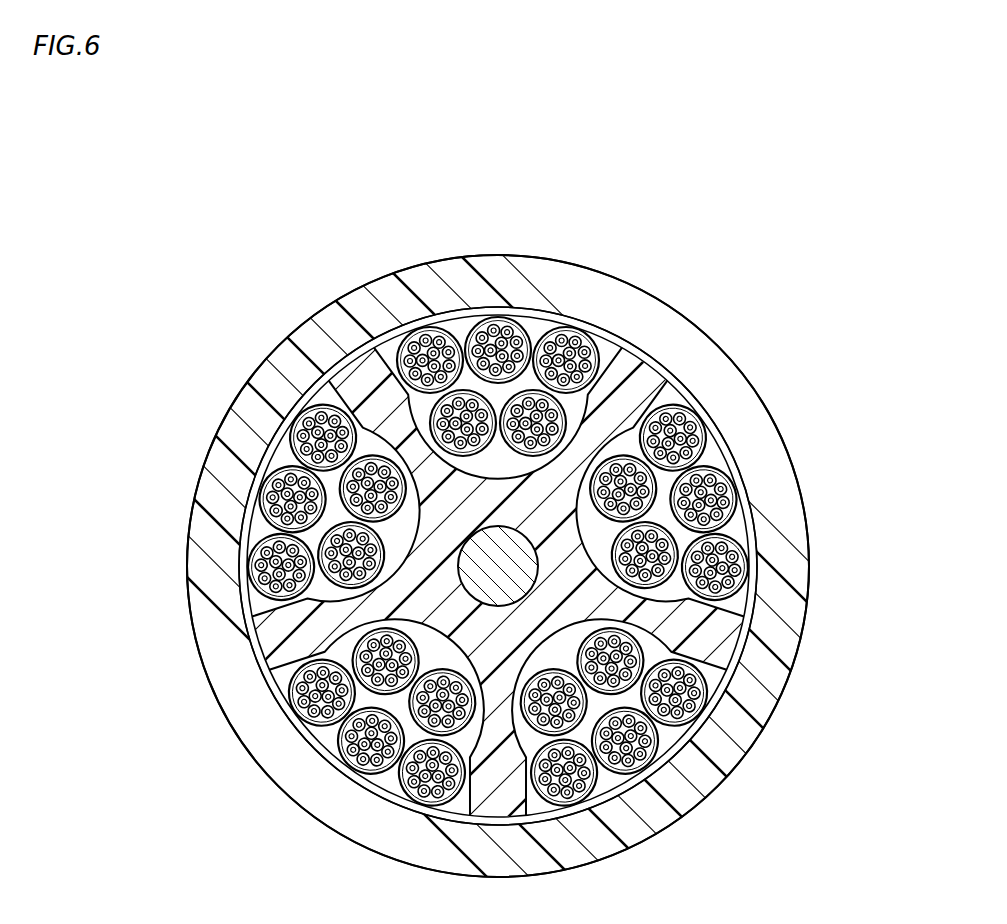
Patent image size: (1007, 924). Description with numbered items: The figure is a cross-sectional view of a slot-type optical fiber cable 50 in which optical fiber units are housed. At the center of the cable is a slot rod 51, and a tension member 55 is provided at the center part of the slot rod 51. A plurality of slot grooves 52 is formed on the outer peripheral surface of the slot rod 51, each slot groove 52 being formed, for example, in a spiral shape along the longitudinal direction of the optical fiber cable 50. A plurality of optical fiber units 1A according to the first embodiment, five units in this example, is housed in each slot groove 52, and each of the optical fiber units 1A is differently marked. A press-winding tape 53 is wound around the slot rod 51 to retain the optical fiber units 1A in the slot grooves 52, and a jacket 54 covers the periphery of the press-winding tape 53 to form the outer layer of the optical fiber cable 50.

The optical fiber unit 1A is at (410, 330).
The optical fiber cable 50 is at (710, 173).
The slot rod 51 is at (661, 352).
The slot groove 52 is at (460, 333).
The press-winding tape 53 is at (692, 758).
The jacket 54 is at (302, 325).
The tension member 55 is at (300, 648).